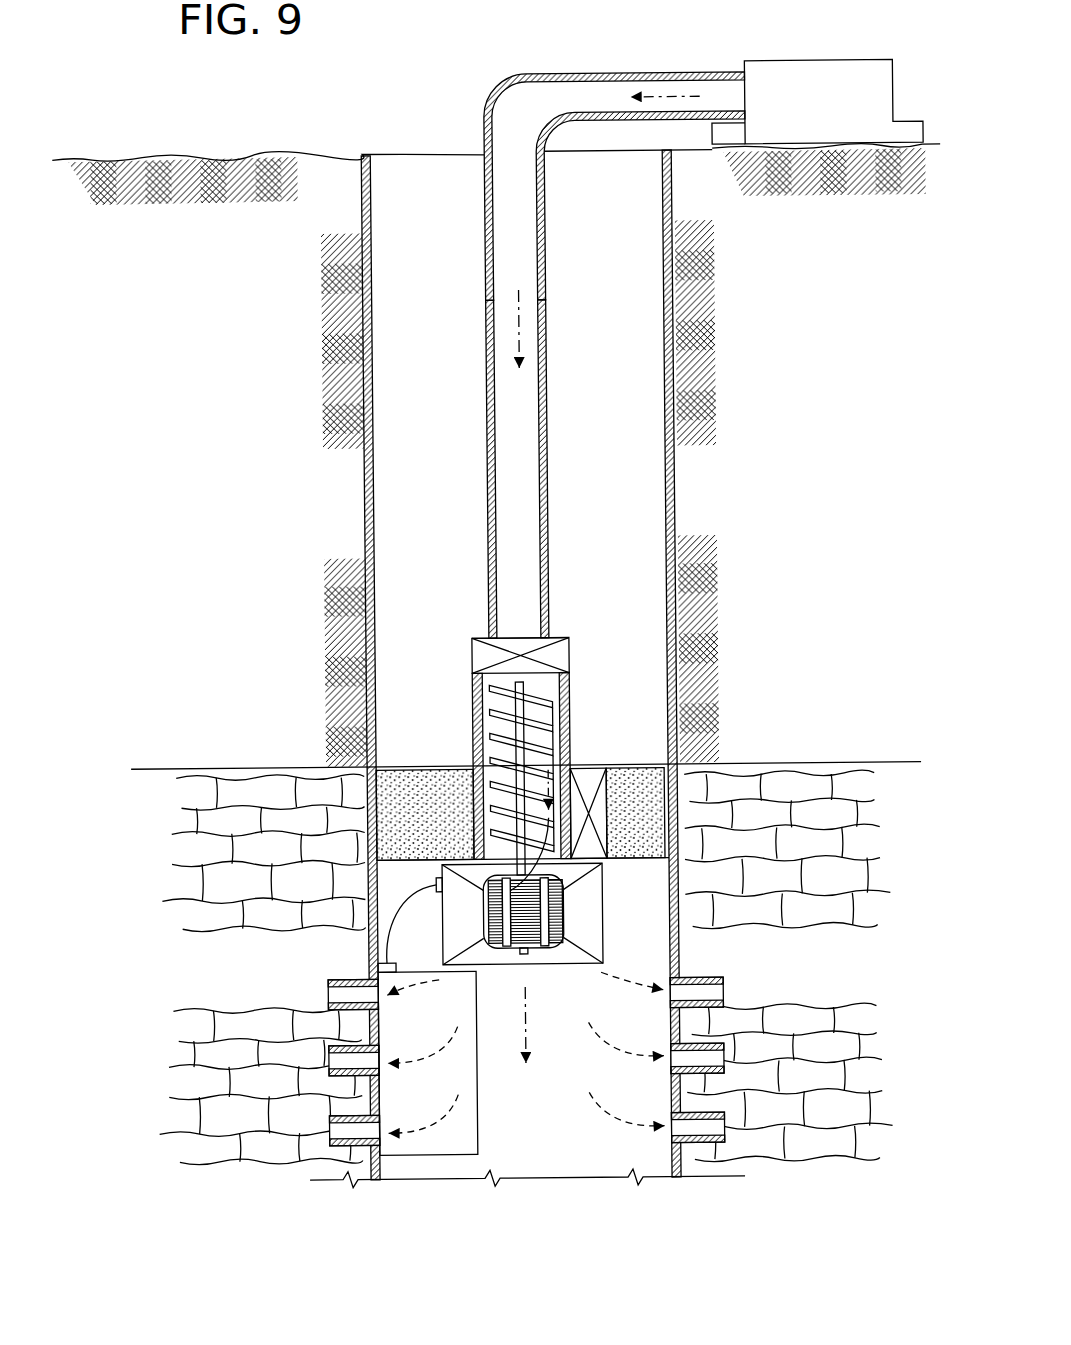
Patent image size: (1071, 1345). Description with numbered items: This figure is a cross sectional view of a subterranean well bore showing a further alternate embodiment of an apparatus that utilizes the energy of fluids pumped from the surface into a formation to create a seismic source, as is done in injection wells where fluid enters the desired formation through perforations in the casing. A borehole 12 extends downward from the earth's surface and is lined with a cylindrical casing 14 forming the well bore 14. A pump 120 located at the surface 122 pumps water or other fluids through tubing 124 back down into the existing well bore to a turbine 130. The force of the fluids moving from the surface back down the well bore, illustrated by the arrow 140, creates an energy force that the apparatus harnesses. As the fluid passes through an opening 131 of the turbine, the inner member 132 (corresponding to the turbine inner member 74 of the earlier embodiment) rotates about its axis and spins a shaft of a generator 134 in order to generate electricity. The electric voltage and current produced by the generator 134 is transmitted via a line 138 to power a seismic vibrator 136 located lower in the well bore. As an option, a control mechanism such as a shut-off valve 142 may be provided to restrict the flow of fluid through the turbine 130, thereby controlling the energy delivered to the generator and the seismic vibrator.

The borehole 12 is at (666, 362).
The casing 14 is at (677, 479).
The inner member 74 is at (482, 760).
The pump 120 is at (840, 112).
The surface 122 is at (252, 157).
The tubing 124 is at (581, 73).
The turbine 130 is at (553, 763).
The opening 131 is at (513, 637).
The inner member 132 is at (503, 892).
The generator 134 is at (563, 912).
The seismic vibrator 136 is at (427, 1150).
The line 138 is at (402, 722).
The arrow 140 is at (520, 343).
The shut-off valve 142 is at (537, 658).